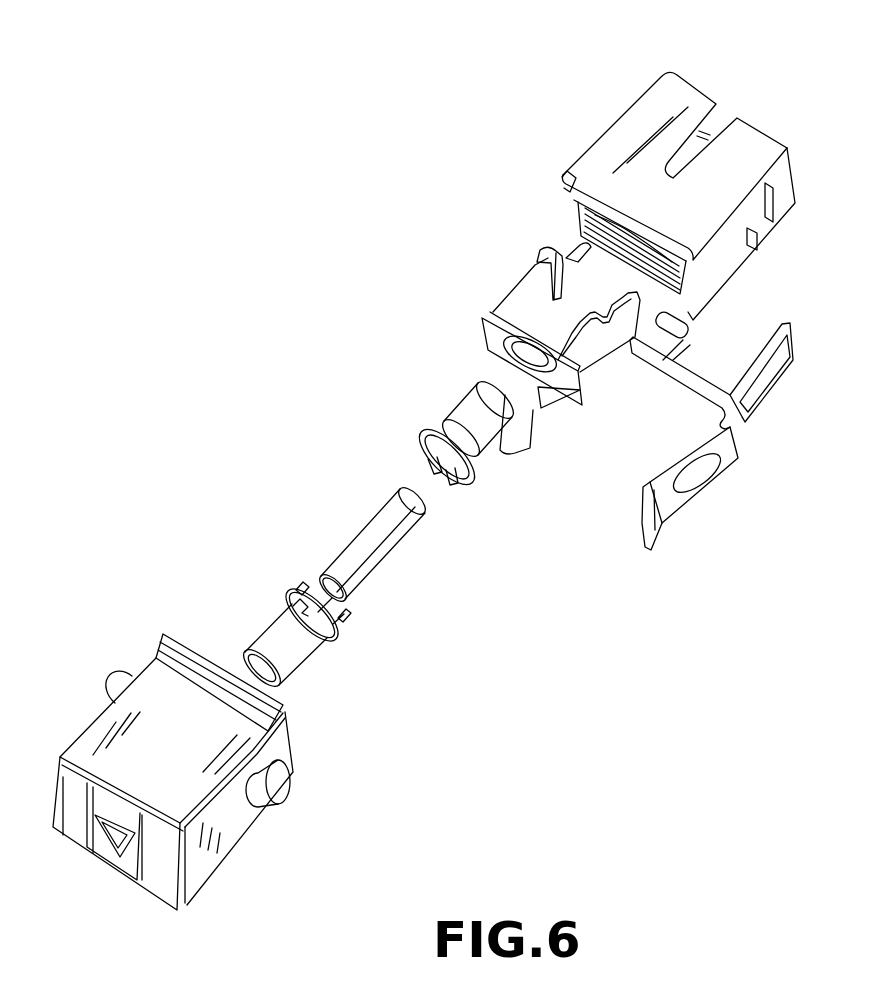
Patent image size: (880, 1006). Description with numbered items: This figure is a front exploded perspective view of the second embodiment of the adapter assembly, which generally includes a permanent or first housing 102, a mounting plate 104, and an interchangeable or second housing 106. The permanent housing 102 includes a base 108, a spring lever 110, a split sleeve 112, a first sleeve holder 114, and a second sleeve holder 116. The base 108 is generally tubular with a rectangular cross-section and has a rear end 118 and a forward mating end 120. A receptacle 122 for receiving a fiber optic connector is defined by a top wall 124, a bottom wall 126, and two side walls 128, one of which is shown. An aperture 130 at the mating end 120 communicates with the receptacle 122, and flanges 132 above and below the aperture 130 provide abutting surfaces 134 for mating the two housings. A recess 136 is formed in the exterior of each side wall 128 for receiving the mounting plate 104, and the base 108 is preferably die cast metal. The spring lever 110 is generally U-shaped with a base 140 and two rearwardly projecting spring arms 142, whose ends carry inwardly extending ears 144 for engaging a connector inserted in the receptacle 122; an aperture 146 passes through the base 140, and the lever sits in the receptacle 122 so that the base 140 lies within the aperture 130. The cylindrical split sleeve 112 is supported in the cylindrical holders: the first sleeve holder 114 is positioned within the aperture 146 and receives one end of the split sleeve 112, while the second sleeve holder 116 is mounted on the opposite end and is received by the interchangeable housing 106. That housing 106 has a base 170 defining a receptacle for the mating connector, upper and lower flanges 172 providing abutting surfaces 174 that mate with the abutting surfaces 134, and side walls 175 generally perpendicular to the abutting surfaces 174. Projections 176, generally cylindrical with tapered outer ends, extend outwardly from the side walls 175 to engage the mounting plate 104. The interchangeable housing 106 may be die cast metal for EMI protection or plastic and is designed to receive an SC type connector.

The first housing 102 is at (578, 72).
The mounting plate 104 is at (725, 457).
The second housing 106 is at (208, 736).
The base 108 is at (631, 170).
The spring lever 110 is at (535, 344).
The split sleeve 112 is at (363, 522).
The first sleeve holder 114 is at (450, 425).
The second sleeve holder 116 is at (265, 623).
The rear end 118 is at (687, 82).
The forward mating end 120 is at (570, 217).
The receptacle 122 is at (680, 163).
The top wall 124 is at (613, 147).
The bottom wall 126 is at (683, 163).
The side walls 128 is at (777, 193).
The aperture 130 is at (572, 238).
The flanges 132 is at (570, 180).
The abutting surfaces 134 is at (577, 242).
The recess 136 is at (747, 250).
The base 140 is at (489, 358).
The spring arms 142 is at (505, 308).
The ears 144 is at (556, 255).
The aperture 146 is at (530, 367).
The base 170 is at (237, 813).
The upper and lower flanges 172 is at (180, 650).
The abutting surfaces 174 is at (280, 708).
The side walls 175 is at (147, 658).
The projections 176 is at (273, 775).